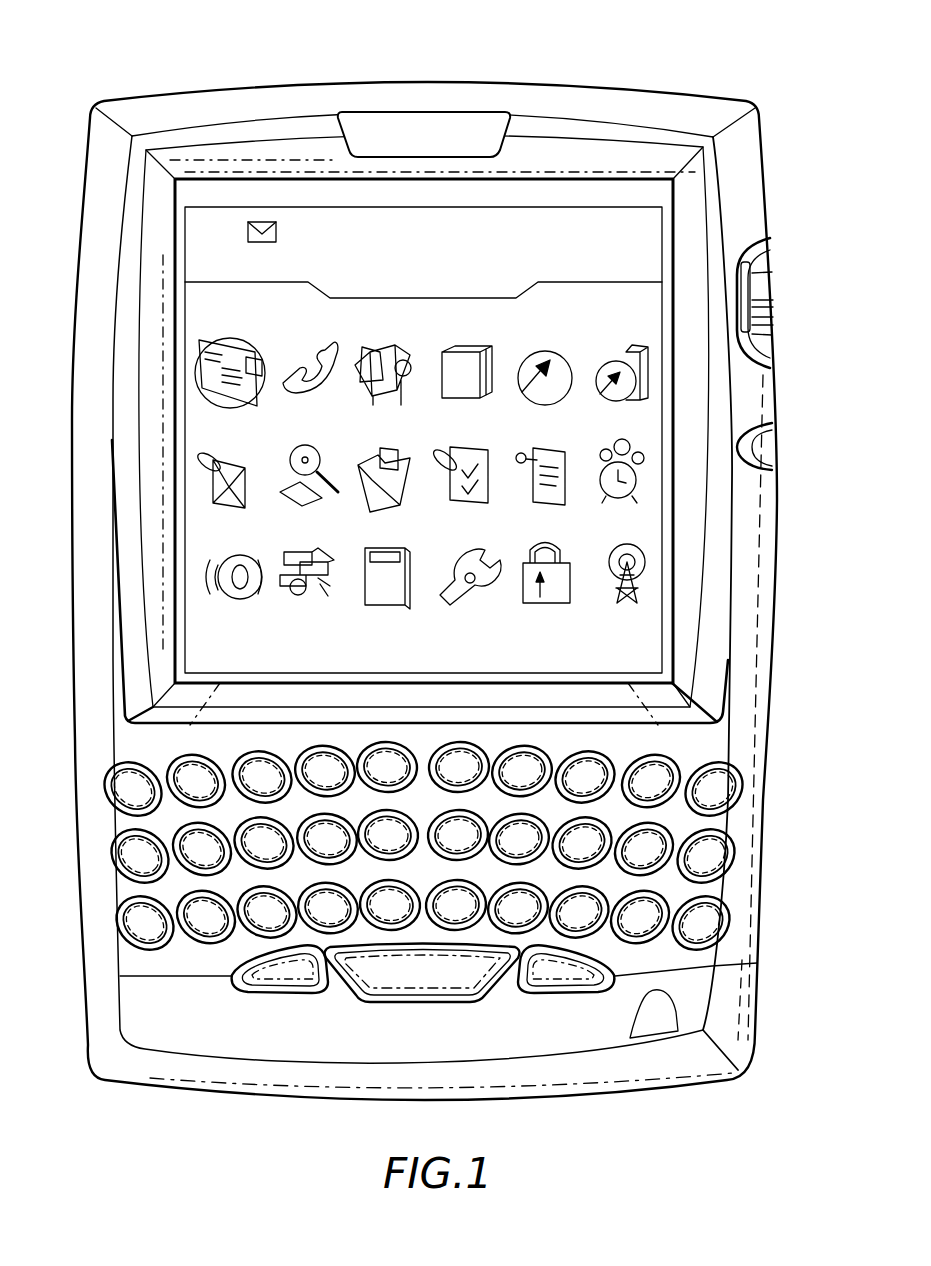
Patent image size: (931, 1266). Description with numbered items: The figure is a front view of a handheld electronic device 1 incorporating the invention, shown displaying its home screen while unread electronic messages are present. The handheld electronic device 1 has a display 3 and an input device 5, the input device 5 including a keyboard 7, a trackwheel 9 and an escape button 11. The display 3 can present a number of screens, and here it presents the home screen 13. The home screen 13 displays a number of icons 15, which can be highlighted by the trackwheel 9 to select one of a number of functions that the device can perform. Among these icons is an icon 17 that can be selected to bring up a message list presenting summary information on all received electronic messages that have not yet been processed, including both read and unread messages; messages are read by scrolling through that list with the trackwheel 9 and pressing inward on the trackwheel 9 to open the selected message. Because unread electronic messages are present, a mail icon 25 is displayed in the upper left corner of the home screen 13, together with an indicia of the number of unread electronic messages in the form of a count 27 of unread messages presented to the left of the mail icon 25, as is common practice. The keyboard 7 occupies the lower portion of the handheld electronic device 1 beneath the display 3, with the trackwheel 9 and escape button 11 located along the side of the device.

The handheld electronic device 1 is at (113, 86).
The display 3 is at (539, 186).
The input device 5 is at (800, 884).
The keyboard 7 is at (717, 853).
The trackwheel 9 is at (778, 288).
The escape button 11 is at (768, 448).
The home screen 13 is at (640, 233).
The icons 15 is at (200, 521).
The icon 17 is at (233, 352).
The mail icon 25 is at (280, 233).
The count 27 is at (228, 243).